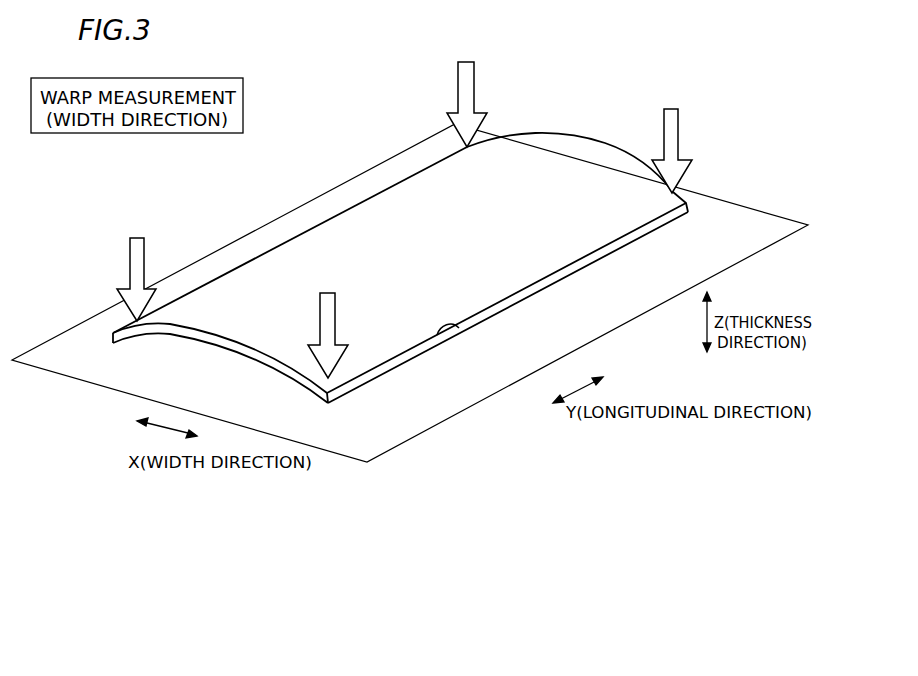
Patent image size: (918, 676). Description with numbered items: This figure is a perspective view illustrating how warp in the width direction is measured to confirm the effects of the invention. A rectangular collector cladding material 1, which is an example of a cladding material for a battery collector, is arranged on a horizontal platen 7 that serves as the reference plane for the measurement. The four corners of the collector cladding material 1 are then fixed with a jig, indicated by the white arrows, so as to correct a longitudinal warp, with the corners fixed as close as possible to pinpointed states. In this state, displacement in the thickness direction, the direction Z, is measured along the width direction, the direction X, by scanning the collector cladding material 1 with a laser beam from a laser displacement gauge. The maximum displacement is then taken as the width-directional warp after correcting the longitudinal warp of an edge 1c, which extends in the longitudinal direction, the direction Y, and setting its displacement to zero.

The collector cladding material 1 is at (614, 168).
The edge 1c is at (335, 213).
The horizontal platen 7 is at (405, 160).